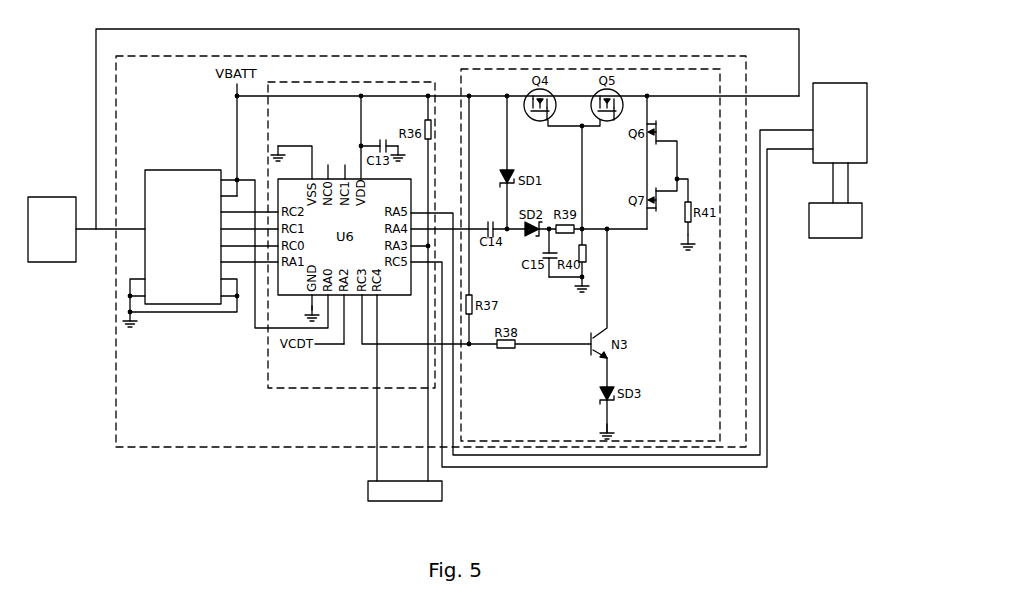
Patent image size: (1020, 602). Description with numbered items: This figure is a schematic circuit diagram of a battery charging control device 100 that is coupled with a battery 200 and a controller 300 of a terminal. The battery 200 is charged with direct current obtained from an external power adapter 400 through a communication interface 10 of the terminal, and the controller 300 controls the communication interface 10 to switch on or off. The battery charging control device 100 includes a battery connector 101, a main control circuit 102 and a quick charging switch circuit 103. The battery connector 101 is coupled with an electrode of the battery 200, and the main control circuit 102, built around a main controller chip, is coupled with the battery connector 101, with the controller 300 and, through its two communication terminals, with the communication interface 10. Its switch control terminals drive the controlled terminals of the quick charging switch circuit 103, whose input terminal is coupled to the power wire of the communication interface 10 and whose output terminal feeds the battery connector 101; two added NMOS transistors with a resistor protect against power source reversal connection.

The communication interface 10 is at (853, 83).
The battery charging control device 100 is at (746, 75).
The battery connector 101 is at (155, 170).
The main control circuit 102 is at (296, 82).
The quick charging switch circuit 103 is at (461, 84).
The battery 200 is at (40, 197).
The controller 300 is at (368, 490).
The power adapter 400 is at (862, 214).